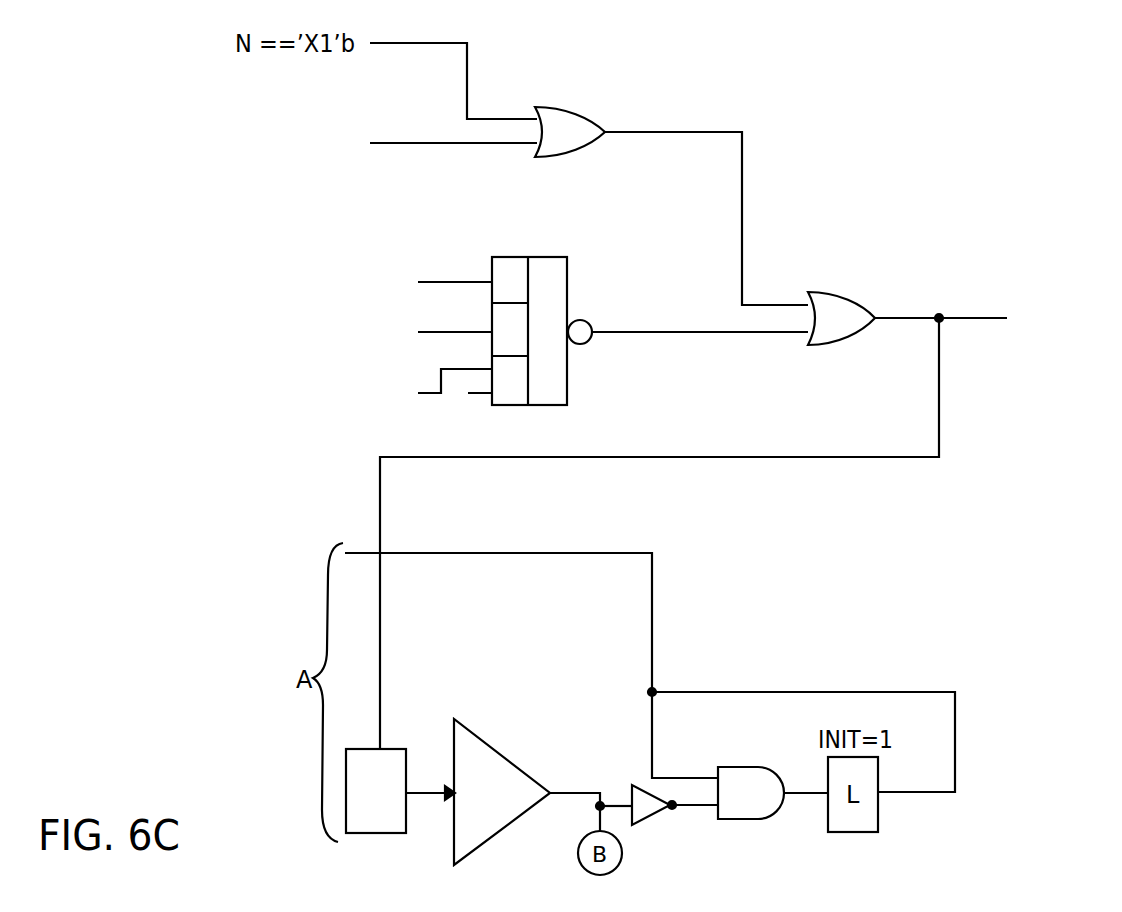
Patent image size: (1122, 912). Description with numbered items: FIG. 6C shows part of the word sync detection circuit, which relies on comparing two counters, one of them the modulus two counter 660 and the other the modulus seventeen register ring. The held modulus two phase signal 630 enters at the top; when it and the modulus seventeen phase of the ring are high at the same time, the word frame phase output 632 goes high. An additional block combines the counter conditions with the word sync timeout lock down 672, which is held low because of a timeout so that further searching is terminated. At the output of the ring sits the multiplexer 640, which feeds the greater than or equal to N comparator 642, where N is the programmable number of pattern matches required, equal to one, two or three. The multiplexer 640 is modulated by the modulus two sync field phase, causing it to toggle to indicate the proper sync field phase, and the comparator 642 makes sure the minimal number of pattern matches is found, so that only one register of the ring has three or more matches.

The modulus 2 phase signal 630 is at (128, 130).
The modulus 2 counter 660 is at (742, 120).
The word frame phase output 632 is at (1045, 272).
The word sync timeout lock down 672 is at (302, 412).
The multiplexer 640 is at (390, 741).
The greater than or equal to N comparator 642 is at (508, 755).